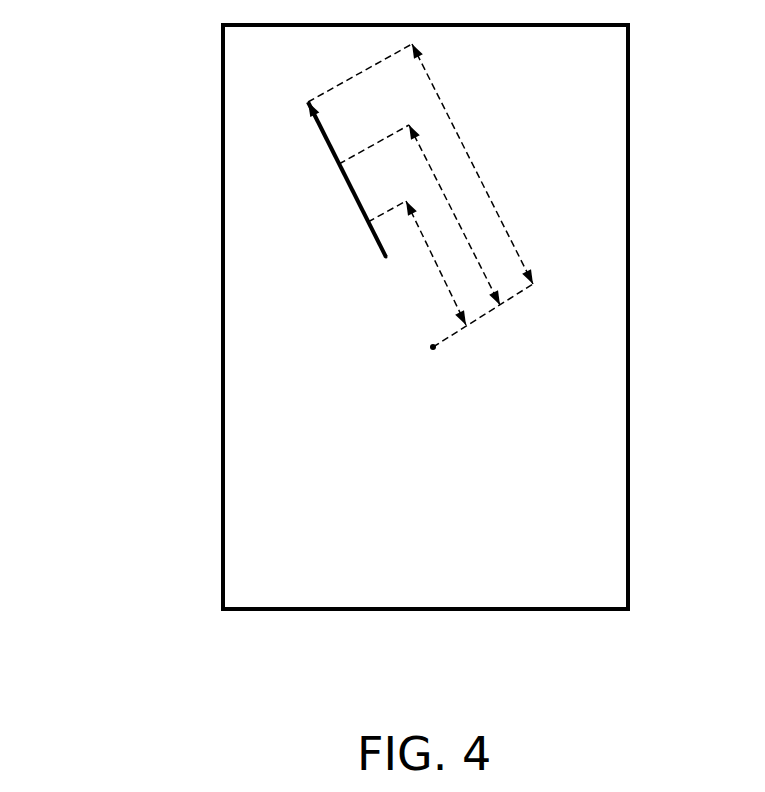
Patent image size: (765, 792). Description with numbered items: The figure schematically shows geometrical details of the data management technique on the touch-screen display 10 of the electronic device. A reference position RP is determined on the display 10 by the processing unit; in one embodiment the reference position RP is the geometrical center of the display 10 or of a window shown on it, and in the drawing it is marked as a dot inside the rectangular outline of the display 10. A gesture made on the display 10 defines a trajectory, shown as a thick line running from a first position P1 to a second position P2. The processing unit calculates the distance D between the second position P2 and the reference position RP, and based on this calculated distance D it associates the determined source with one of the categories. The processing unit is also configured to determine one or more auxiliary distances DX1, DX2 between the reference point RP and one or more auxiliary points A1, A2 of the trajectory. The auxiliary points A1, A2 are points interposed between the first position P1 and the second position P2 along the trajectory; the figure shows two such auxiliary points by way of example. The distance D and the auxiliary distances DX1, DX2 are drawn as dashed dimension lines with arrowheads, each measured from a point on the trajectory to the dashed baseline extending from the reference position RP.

The touch-screen display 10 is at (223, 383).
The first position P1 is at (386, 257).
The second position P2 is at (308, 103).
The auxiliary point A1 is at (368, 222).
The auxiliary point A2 is at (339, 164).
The distance D is at (466, 143).
The auxiliary distance DX1 is at (452, 293).
The auxiliary distance DX2 is at (487, 193).
The reference position RP is at (433, 347).